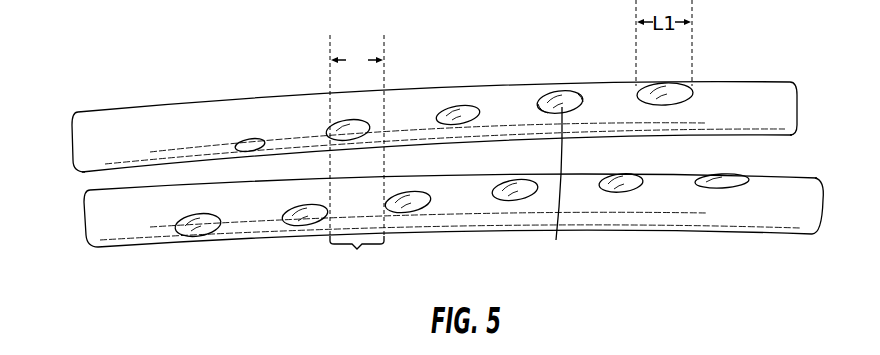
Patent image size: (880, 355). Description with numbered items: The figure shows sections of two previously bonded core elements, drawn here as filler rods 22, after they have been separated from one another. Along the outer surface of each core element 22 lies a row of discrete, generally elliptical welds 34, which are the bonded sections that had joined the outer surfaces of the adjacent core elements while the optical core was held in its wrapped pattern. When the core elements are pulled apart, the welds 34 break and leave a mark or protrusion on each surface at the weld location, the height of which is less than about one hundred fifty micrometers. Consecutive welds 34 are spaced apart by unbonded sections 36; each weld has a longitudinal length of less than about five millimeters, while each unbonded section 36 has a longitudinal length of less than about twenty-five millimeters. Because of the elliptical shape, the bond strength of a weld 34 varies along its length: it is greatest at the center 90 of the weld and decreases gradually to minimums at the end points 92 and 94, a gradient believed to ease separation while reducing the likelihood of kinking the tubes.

The filler rod 22 is at (790, 105).
The weld 34 is at (567, 84).
The unbonded section 36 is at (357, 157).
The center of weld 90 is at (557, 189).
The end point of weld 92 is at (530, 107).
The end point of weld 94 is at (585, 101).